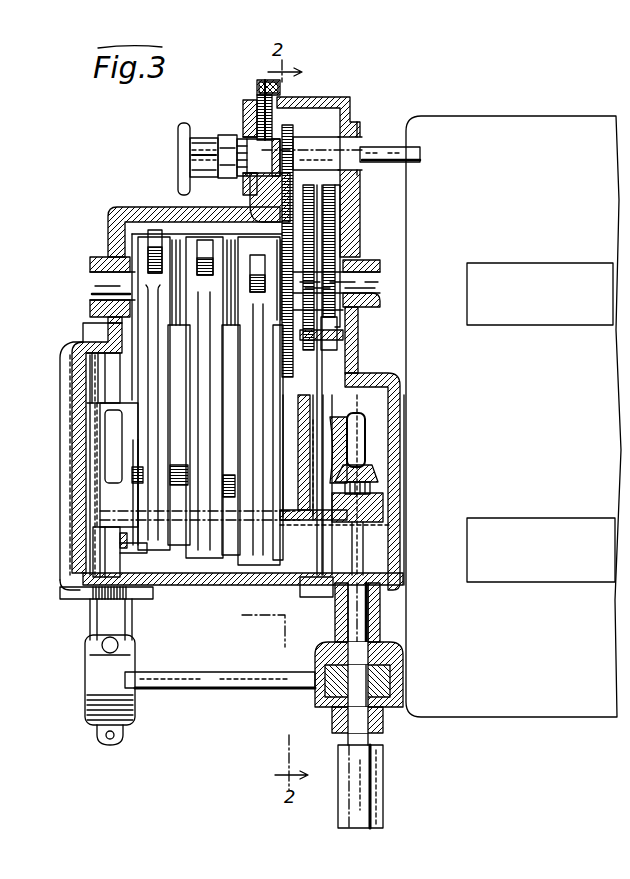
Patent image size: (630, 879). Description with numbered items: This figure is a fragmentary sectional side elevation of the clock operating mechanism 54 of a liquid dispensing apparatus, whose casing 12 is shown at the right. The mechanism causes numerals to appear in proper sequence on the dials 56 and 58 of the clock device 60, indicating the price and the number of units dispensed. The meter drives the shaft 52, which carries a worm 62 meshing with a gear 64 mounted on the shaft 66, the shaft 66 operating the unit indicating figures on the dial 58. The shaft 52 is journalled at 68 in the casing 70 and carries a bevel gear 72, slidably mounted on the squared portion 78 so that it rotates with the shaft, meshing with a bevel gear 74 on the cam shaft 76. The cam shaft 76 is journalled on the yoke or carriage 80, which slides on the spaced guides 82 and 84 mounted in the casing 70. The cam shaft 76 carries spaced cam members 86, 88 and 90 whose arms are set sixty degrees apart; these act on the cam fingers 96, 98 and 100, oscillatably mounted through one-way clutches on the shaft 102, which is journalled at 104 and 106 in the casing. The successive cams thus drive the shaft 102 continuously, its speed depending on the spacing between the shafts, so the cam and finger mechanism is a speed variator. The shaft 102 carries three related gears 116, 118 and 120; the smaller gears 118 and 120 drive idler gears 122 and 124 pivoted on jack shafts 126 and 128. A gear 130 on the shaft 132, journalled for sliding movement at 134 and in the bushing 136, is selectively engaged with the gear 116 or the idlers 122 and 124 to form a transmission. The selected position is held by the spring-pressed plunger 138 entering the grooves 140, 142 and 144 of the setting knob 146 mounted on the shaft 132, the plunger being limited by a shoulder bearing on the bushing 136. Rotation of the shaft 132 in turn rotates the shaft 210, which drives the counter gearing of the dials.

The housing 12 is at (201, 456).
The shaft 52 is at (380, 745).
The clock operating mechanism 54 is at (128, 207).
The dial 56 is at (560, 263).
The dial 58 is at (552, 582).
The clock device 60 is at (552, 717).
The worm 62 is at (335, 712).
The gear 64 is at (403, 650).
The shaft 66 is at (235, 690).
The journal 68 is at (335, 622).
The casing 70 is at (148, 599).
The bevel gear 72 is at (378, 473).
The bevel gear 74 is at (368, 378).
The cam shaft 76 is at (300, 512).
The squared portion 78 is at (365, 430).
The yoke or carriage 80 is at (135, 527).
The guide 82 is at (333, 537).
The guide 84 is at (98, 538).
The cam member 86 is at (235, 583).
The cam member 88 is at (183, 512).
The cam member 90 is at (138, 432).
The cam finger 96 is at (258, 562).
The cam finger 98 is at (208, 560).
The cam finger 100 is at (150, 462).
The shaft 102 is at (90, 285).
The journal 104 is at (92, 257).
The journal 106 is at (372, 260).
The gear 116 is at (262, 214).
The gear 118 is at (358, 330).
The gear 120 is at (380, 308).
The idler gear 122 is at (325, 137).
The idler gear 124 is at (360, 205).
The jack shaft 126 is at (308, 183).
The jack shaft 128 is at (362, 197).
The gear 130 is at (288, 122).
The shaft 132 is at (358, 122).
The journal 134 is at (362, 130).
The bushing 136 is at (257, 118).
The spring-pressed plunger 138 is at (258, 85).
The groove 140 is at (220, 140).
The groove 142 is at (205, 157).
The groove 144 is at (242, 140).
The setting knob 146 is at (178, 135).
The shaft 210 is at (386, 147).